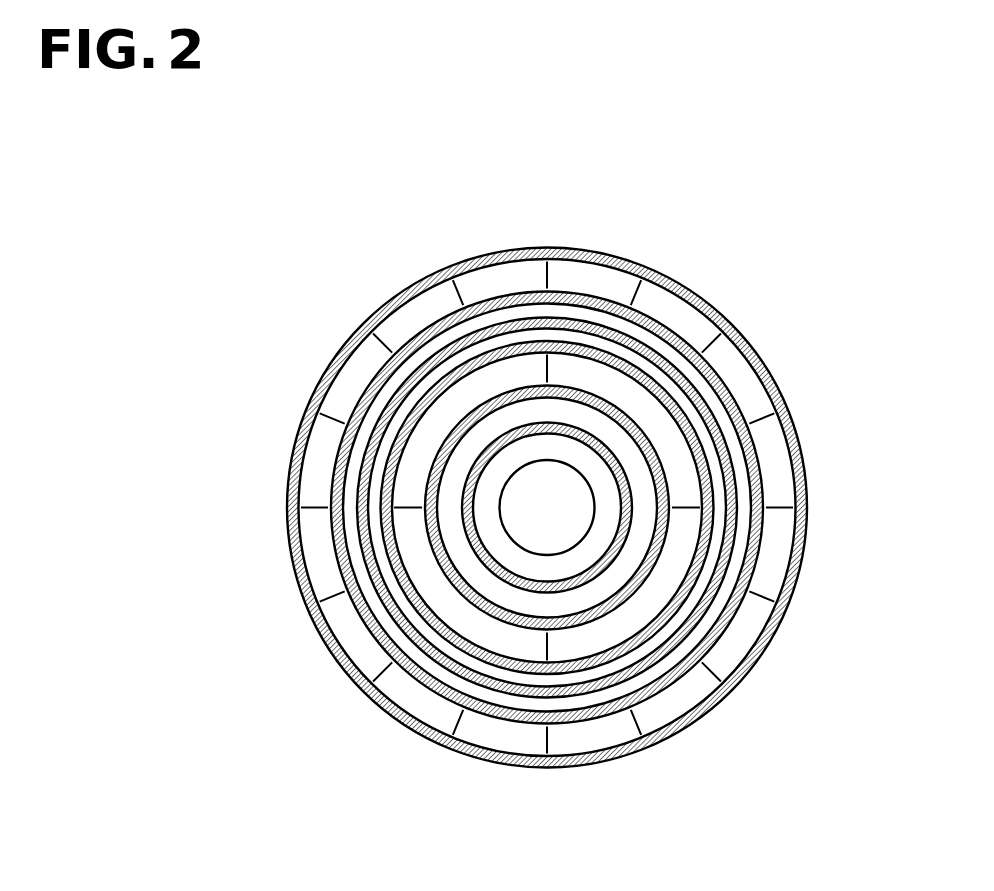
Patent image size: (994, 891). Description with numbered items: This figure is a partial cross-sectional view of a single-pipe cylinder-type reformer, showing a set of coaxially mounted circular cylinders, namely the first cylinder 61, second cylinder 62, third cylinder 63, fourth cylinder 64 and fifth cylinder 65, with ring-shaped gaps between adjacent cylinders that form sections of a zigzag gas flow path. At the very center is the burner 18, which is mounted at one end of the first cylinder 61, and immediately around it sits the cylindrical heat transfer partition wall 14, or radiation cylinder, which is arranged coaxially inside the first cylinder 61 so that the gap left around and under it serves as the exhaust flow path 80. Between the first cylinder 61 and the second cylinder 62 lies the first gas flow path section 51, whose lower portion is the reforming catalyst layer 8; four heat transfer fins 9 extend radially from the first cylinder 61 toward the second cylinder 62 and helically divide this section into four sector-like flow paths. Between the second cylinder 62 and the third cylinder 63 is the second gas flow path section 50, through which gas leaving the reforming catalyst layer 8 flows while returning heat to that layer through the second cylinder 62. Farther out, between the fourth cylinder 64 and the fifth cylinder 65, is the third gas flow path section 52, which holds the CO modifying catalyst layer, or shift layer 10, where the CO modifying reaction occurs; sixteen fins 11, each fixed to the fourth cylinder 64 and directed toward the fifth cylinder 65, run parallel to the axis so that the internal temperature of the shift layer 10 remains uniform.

The reforming catalyst layer 8 is at (588, 367).
The heat transfer fins 9 is at (552, 368).
The CO modifying catalyst layer 10 is at (675, 700).
The fins 11 is at (630, 707).
The heat transfer partition wall 14 is at (633, 498).
The burner 18 is at (573, 498).
The second gas flow path section 50 is at (480, 667).
The first gas flow path section 51 is at (450, 605).
The third gas flow path section 52 is at (512, 732).
The first cylinder 61 is at (710, 488).
The second cylinder 62 is at (713, 538).
The third cylinder 63 is at (727, 580).
The fourth cylinder 64 is at (727, 632).
The fifth cylinder 65 is at (737, 683).
The exhaust flow path 80 is at (593, 422).